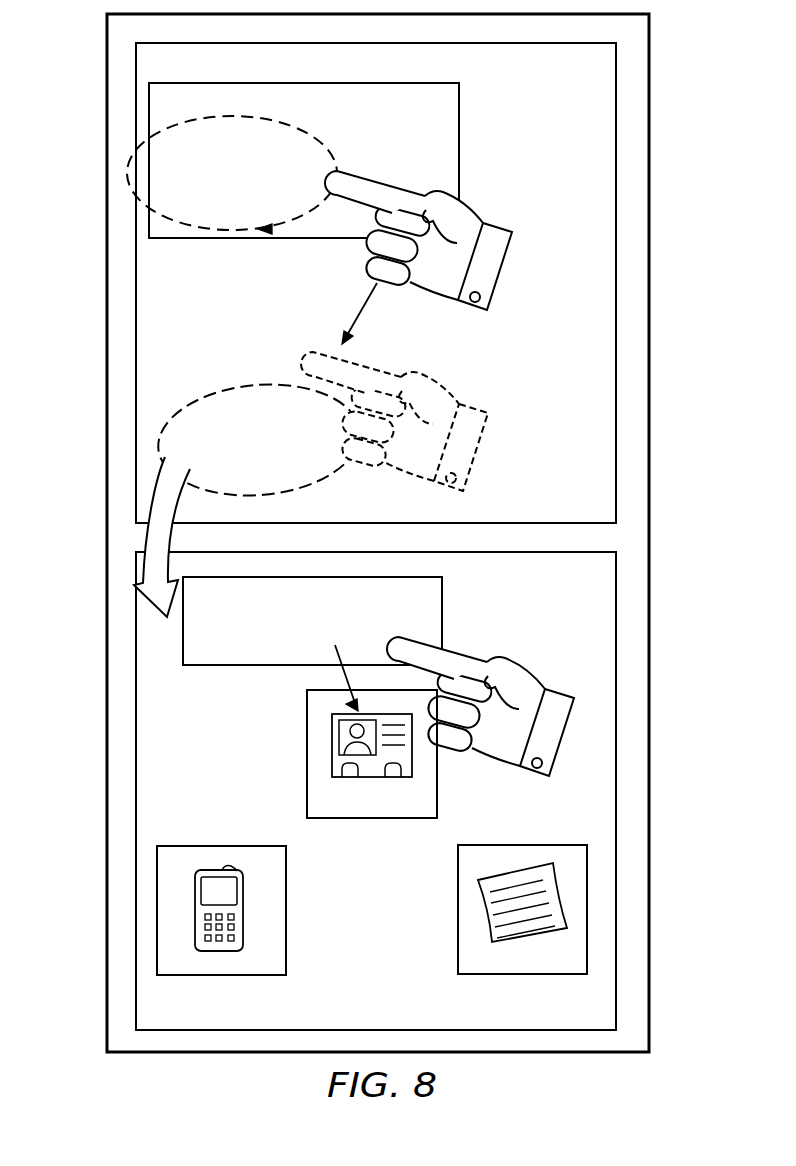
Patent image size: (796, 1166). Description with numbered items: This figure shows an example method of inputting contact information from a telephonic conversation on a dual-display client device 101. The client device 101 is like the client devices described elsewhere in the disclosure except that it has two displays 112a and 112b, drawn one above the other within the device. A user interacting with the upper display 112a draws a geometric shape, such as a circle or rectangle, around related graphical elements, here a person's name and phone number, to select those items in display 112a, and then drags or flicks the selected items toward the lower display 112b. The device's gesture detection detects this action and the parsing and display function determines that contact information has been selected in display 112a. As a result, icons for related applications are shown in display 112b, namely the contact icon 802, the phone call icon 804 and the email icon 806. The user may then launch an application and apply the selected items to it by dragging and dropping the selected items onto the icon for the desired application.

The client device 101 is at (658, 84).
The display 112a is at (148, 312).
The display 112b is at (325, 791).
The contact icon 802 is at (307, 756).
The phone call icon 804 is at (286, 910).
The email icon 806 is at (457, 937).